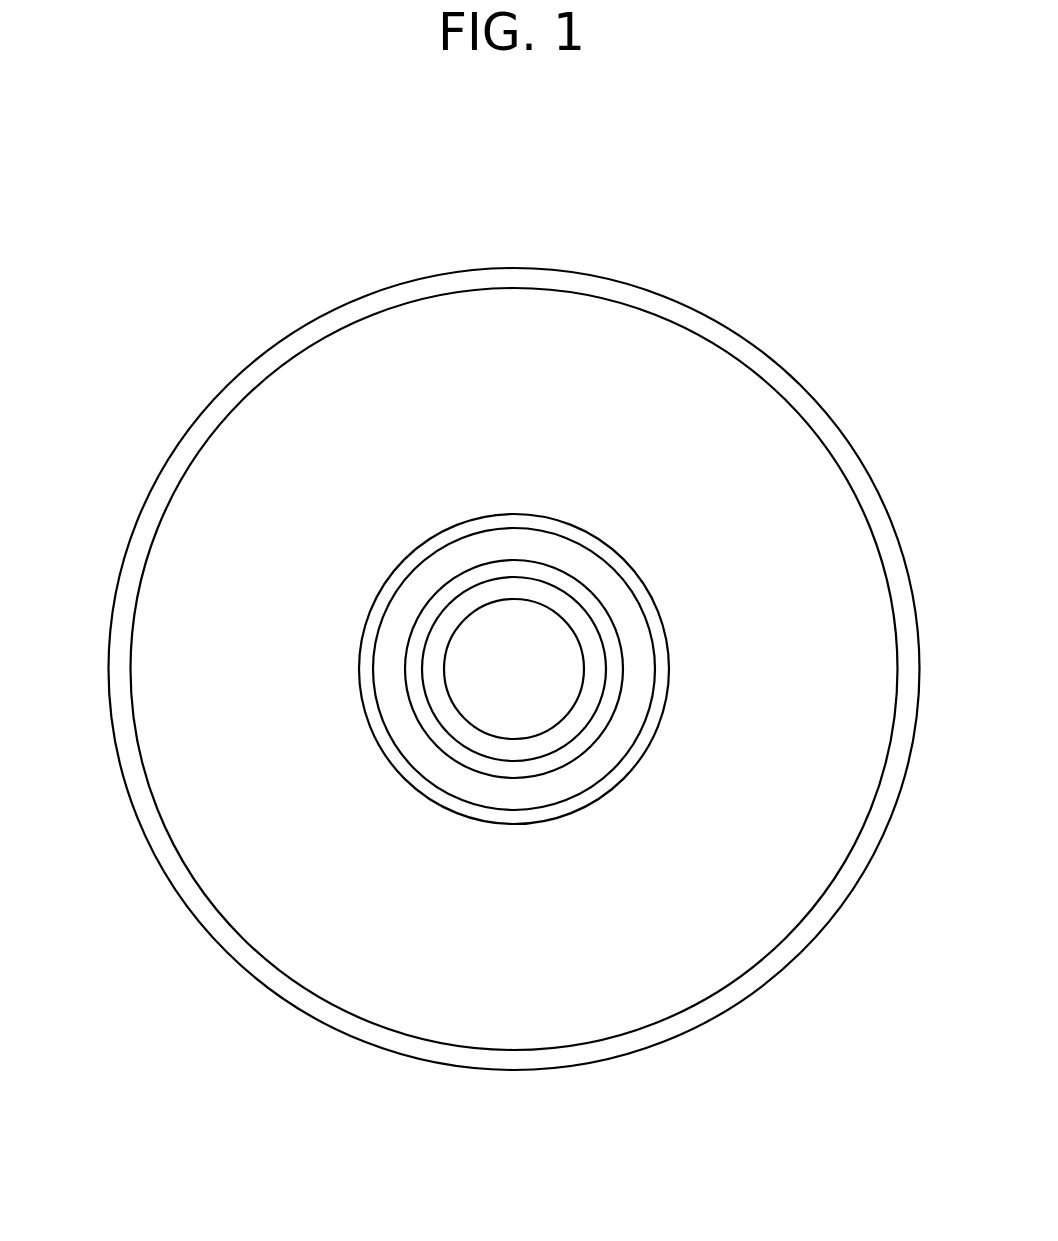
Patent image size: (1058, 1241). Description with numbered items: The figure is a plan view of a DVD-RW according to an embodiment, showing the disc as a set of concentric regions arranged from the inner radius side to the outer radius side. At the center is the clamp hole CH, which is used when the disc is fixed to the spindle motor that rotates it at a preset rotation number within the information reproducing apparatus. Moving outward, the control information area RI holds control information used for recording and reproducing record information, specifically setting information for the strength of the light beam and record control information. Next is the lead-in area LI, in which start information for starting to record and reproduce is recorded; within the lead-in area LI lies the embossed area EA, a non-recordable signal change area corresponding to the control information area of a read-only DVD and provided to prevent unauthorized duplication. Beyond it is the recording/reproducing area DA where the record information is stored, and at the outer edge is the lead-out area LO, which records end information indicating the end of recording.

The recording/reproducing area DA is at (441, 532).
The lead-out area LO is at (334, 331).
The embossed area EA is at (569, 575).
The clamp hole CH is at (585, 682).
The control information area RI is at (507, 739).
The lead-in area LI is at (445, 730).